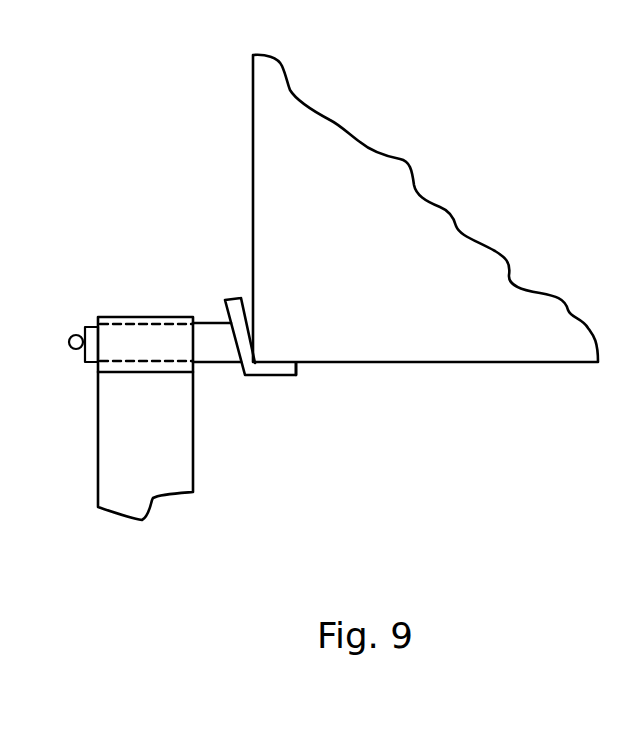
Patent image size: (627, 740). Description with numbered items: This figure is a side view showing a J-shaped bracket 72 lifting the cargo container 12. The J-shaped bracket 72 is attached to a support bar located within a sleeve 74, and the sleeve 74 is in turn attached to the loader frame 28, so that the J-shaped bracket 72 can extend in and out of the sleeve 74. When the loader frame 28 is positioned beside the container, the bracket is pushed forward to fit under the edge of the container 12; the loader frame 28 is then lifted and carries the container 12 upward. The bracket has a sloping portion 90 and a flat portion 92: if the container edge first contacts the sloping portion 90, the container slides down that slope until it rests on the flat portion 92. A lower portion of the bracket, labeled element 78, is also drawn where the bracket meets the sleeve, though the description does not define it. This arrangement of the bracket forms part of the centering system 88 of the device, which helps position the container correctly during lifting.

The cargo container 12 is at (300, 108).
The loader frame 28 is at (187, 422).
The J-shaped bracket 72 is at (210, 333).
The sleeve 74 is at (150, 318).
The lower rod portion 78 is at (207, 352).
The centering system 88 is at (328, 484).
The sloping portion 90 is at (237, 314).
The flat portion 92 is at (298, 372).